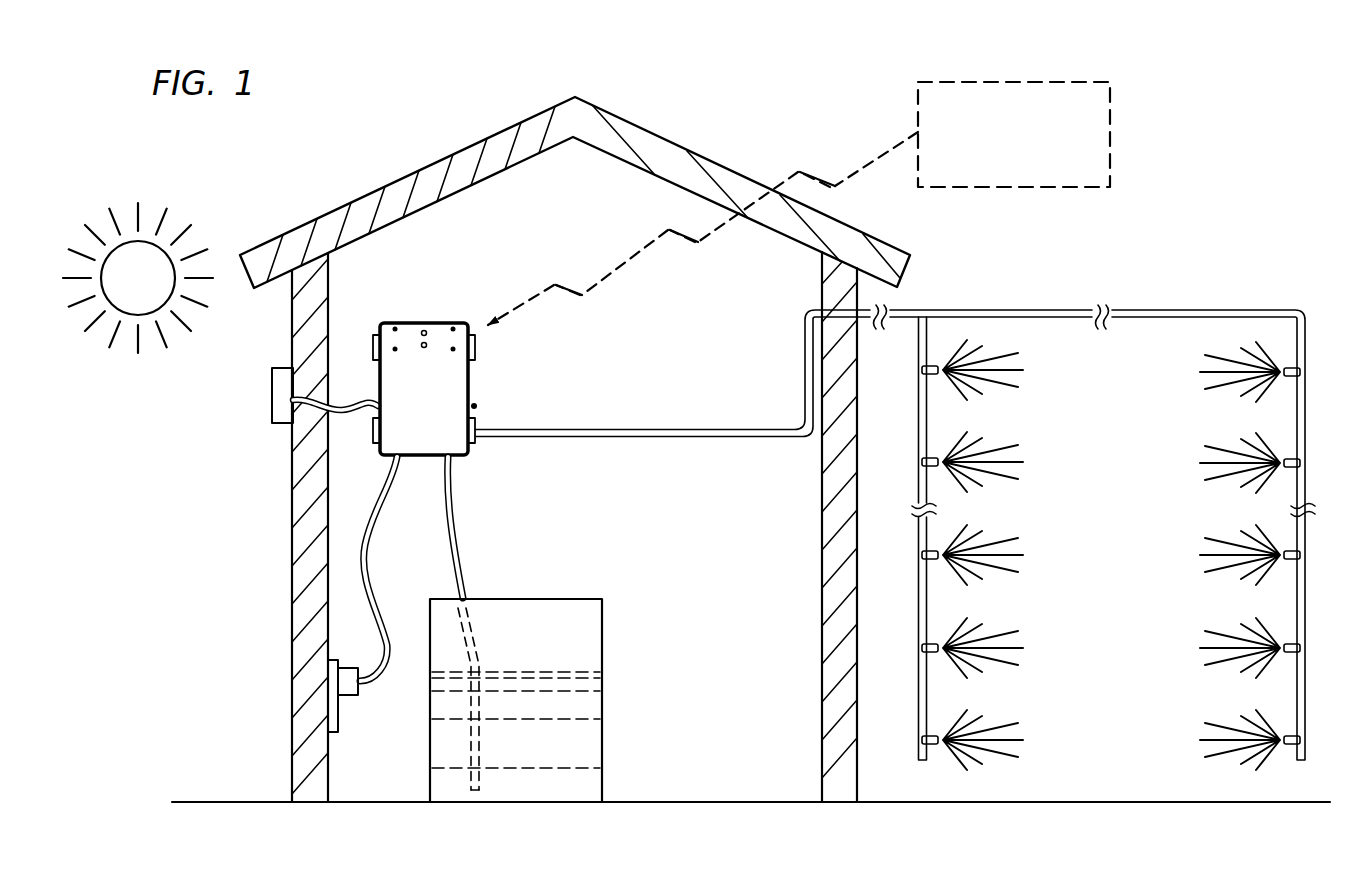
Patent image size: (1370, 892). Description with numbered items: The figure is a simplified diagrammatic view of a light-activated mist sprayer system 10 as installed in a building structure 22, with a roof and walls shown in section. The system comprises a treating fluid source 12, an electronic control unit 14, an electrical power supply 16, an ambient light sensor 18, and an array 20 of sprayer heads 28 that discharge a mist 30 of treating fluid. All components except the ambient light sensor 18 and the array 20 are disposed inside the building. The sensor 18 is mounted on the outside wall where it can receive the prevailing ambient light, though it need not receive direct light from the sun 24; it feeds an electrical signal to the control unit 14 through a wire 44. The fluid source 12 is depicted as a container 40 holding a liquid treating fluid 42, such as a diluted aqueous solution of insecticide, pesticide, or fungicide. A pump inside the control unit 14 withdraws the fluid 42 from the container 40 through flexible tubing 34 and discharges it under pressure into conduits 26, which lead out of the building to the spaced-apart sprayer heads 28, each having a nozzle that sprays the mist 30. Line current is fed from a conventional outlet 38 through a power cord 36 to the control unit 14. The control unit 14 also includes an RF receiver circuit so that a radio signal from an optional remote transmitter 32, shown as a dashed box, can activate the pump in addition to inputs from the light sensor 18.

The light-activated mist sprayer system 10 is at (1095, 493).
The treating fluid source 12 is at (551, 679).
The electronic control unit 14 is at (480, 390).
The electrical power supply 16 is at (389, 680).
The ambient light sensor 18 is at (266, 405).
The array of sprayer heads 20 is at (1050, 294).
The building structure 22 is at (396, 169).
The sun 24 is at (152, 411).
The conduits 26 is at (640, 430).
The sprayer heads 28 is at (937, 462).
The mist 30 is at (1010, 453).
The optional remote transmitter 32 is at (1013, 80).
The tubing 34 is at (455, 522).
The power cord 36 is at (370, 603).
The conventional outlet 38 is at (338, 730).
The container 40 is at (552, 598).
The liquid treating fluid 42 is at (572, 672).
The wire 44 is at (366, 413).